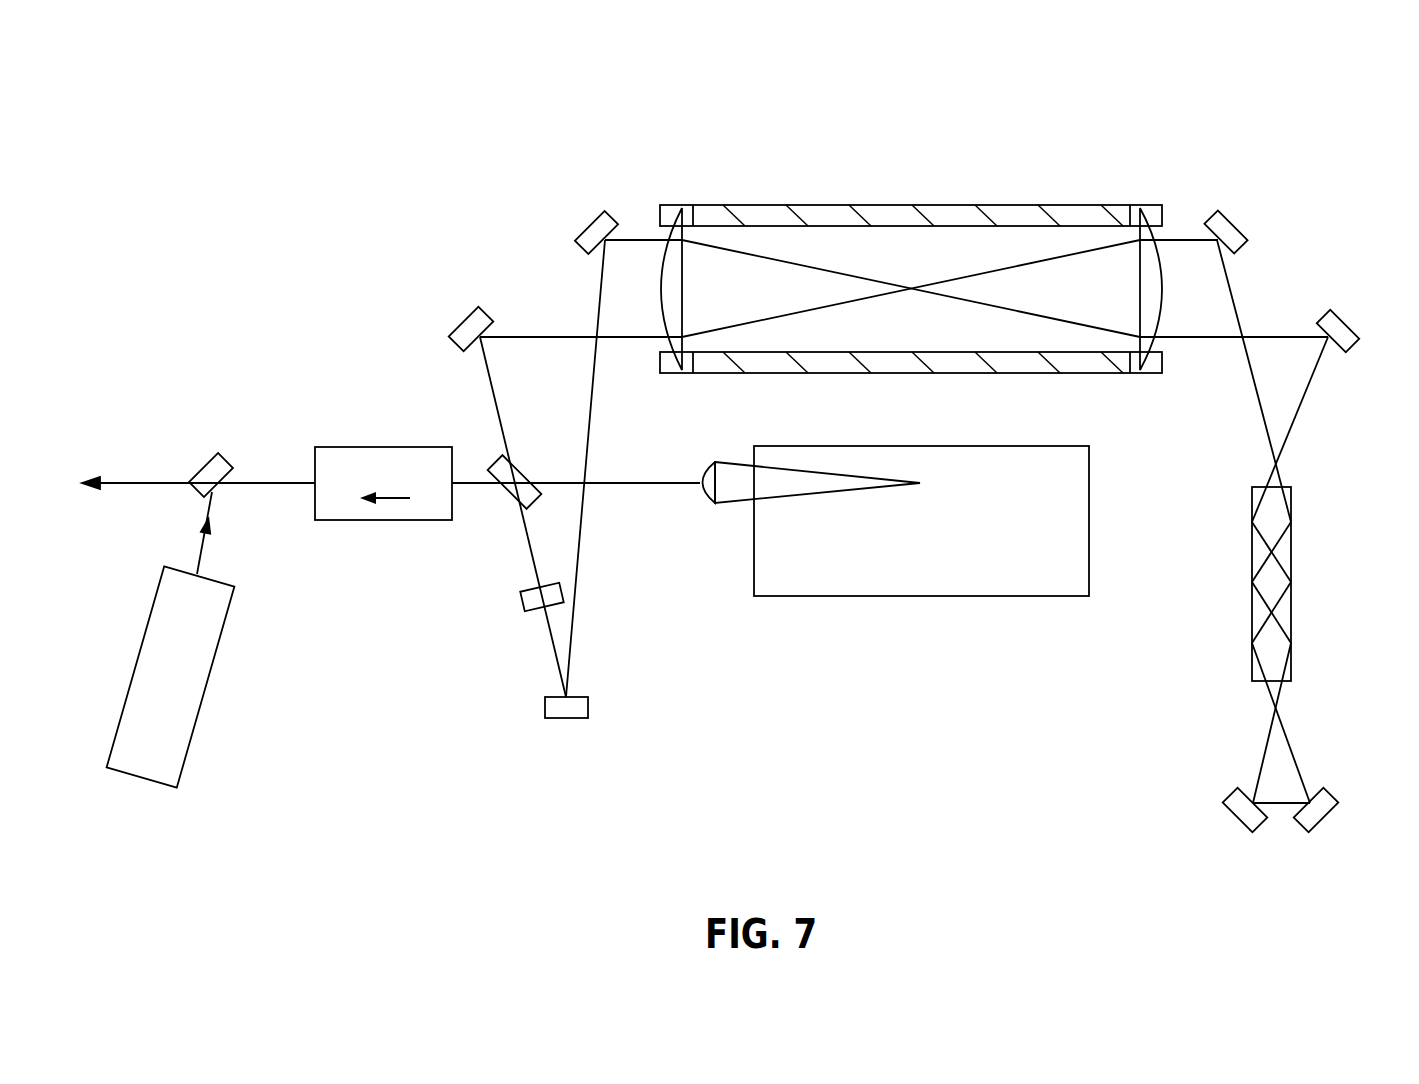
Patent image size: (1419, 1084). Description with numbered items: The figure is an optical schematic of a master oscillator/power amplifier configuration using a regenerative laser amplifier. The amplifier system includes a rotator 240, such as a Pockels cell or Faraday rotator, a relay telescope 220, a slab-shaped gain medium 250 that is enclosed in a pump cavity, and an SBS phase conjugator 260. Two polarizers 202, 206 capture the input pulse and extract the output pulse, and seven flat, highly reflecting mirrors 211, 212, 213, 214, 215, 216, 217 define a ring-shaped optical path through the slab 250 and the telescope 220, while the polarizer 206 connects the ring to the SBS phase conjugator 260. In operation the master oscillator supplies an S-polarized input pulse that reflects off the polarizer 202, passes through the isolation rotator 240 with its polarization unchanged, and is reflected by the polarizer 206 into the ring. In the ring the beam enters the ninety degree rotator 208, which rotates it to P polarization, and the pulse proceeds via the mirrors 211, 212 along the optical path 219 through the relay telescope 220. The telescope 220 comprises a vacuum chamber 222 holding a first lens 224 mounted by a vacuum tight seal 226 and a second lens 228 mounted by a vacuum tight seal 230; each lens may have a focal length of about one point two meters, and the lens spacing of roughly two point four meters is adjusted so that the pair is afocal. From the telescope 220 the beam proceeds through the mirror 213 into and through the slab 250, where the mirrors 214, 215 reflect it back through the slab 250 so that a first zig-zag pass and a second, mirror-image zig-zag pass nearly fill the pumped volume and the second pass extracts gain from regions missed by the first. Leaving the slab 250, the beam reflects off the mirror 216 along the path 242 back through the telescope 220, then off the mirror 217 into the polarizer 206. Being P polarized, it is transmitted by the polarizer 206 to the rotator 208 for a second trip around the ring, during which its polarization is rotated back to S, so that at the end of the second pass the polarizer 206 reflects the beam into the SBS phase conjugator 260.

The polarizer 202 is at (192, 460).
The polarizer 206 is at (497, 508).
The 90 degree rotator 208 is at (213, 657).
The flat highly reflecting mirror 211 is at (540, 708).
The flat highly reflecting mirror 212 is at (592, 216).
The flat highly reflecting mirror 213 is at (1345, 318).
The flat highly reflecting mirror 214 is at (1322, 818).
The flat highly reflecting mirror 215 is at (1237, 820).
The flat highly reflecting mirror 216 is at (1238, 220).
The flat highly reflecting mirror 217 is at (462, 318).
The optical path 219 is at (776, 258).
The relay telescope 220 is at (930, 110).
The vacuum chamber 222 is at (858, 205).
The first lens 224 is at (660, 285).
The vacuum tight seal 226 is at (678, 208).
The second lens 228 is at (1138, 285).
The vacuum tight seal 230 is at (1148, 205).
The rotator 240 is at (375, 447).
The path 242 is at (1025, 262).
The slab-shaped gain medium 250 is at (1293, 550).
The SBS phase conjugator 260 is at (878, 596).